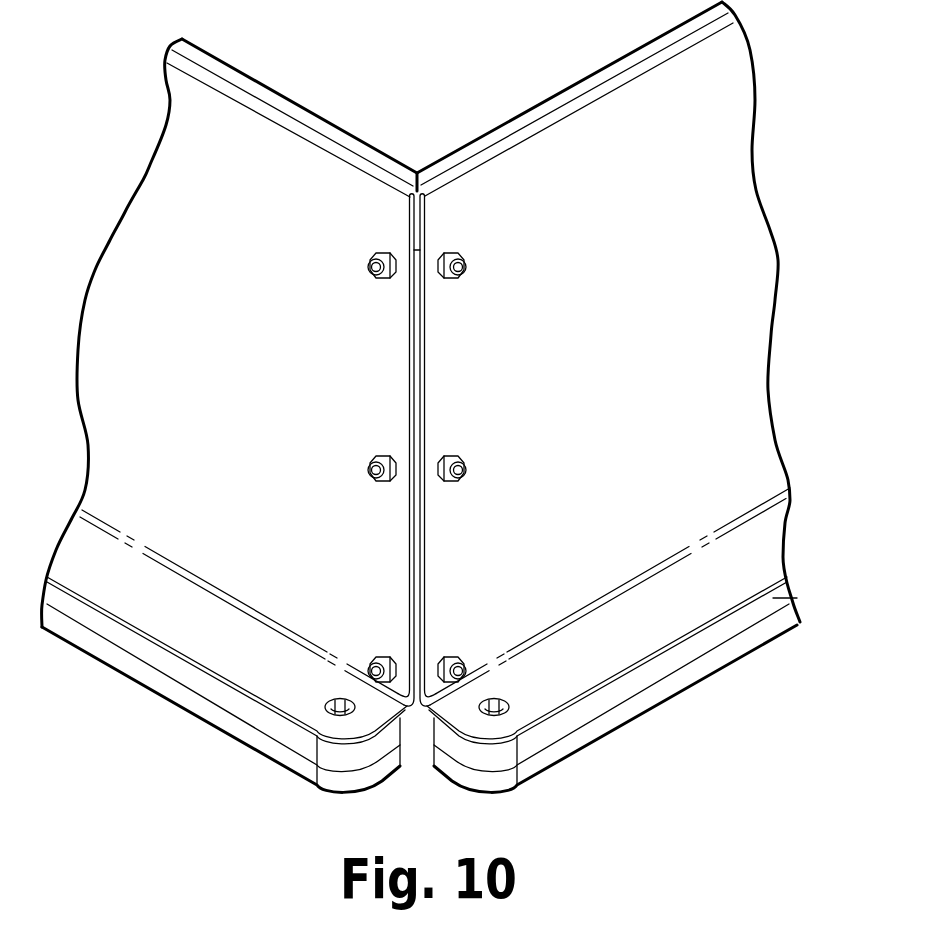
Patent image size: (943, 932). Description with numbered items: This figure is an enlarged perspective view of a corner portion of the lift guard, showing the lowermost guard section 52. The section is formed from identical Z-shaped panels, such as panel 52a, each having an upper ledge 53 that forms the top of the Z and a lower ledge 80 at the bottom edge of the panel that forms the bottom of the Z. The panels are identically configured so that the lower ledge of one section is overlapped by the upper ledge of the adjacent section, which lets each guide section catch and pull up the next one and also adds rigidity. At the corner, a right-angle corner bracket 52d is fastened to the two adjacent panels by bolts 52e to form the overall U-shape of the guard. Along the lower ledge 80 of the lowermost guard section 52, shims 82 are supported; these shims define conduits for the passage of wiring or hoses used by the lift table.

The lowermost guard section 52 is at (737, 337).
The panel 52a is at (662, 262).
The corner bracket 52d is at (419, 306).
The bolts 52e is at (464, 260).
The ledge 53 is at (453, 170).
The lower ledge 80 is at (773, 541).
The shims 82 is at (776, 620).